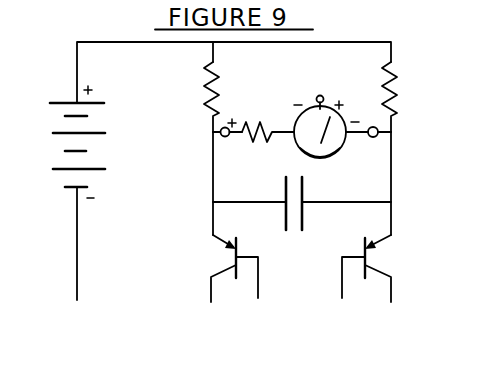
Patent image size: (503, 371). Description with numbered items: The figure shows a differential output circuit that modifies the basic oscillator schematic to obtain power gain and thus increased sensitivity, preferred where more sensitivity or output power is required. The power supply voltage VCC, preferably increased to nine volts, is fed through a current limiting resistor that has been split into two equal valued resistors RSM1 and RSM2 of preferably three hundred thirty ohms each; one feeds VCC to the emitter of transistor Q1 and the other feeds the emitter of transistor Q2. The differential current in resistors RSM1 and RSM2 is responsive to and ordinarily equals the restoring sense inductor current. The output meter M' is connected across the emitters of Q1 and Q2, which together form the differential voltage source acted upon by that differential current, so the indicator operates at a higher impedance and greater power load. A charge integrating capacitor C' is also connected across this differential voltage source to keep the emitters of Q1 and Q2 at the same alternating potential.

The power supply voltage VCC is at (64, 186).
The current limiting resistor RSM1 is at (172, 97).
The current limiting resistor RSM2 is at (418, 97).
The output meter M' is at (302, 110).
The charge integrating capacitor C' is at (302, 201).
The transistor Q1 is at (222, 268).
The transistor Q2 is at (376, 268).